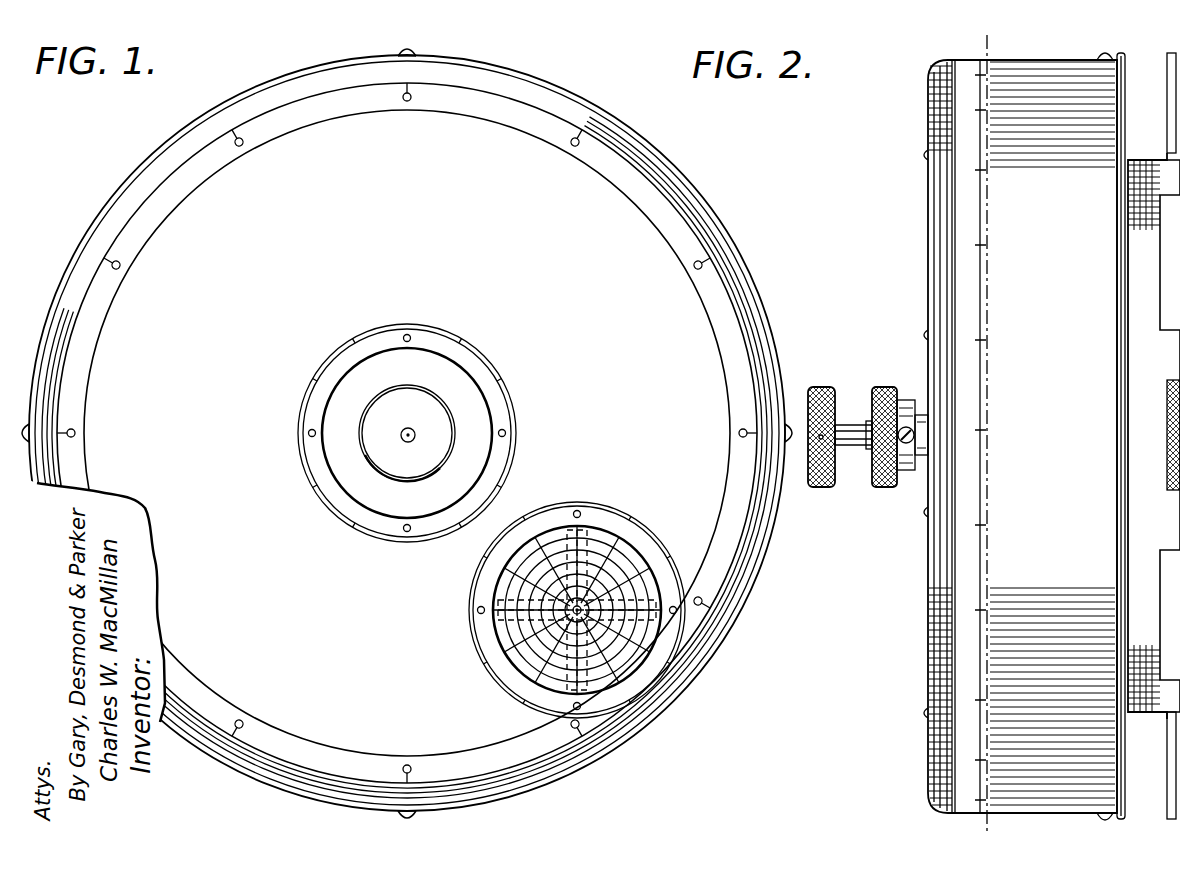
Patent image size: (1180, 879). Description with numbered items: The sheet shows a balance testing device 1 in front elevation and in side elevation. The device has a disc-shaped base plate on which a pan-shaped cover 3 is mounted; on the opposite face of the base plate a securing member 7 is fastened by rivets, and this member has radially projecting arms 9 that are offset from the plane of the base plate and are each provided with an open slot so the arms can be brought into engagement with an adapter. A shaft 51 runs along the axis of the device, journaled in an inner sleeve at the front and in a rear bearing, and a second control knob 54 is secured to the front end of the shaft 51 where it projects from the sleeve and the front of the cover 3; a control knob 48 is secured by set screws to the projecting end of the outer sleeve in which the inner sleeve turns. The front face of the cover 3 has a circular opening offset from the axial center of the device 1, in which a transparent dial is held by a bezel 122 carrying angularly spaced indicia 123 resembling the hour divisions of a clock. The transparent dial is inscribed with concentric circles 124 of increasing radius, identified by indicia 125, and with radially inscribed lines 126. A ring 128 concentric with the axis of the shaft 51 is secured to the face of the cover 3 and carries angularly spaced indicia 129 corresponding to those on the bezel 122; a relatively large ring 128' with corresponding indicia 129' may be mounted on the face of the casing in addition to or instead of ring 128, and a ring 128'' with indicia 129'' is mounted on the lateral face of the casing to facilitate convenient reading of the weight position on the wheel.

In FIG. 1, the balance testing device 1 is at (699, 171).
In FIG. 2, the balance testing device 1 is at (917, 281).
In FIG. 2, the pan-shaped cover 3 is at (1010, 46).
In FIG. 2, the securing member 7 is at (1162, 243).
In FIG. 2, the radially projecting arms 9 is at (1167, 116).
In FIG. 2, the control knob 48 is at (888, 387).
In FIG. 1, the shaft 51 is at (404, 441).
In FIG. 2, the shaft 51 is at (853, 446).
In FIG. 1, the second control knob 54 is at (452, 415).
In FIG. 2, the second control knob 54 is at (820, 387).
In FIG. 1, the bezel 122 is at (537, 703).
In FIG. 2, the bezel 122 is at (927, 633).
In FIG. 1, the angularly spaced indicia 123 is at (632, 690).
In FIG. 1, the concentric circles 124 is at (495, 658).
In FIG. 1, the indicia 125 is at (580, 700).
In FIG. 1, the radially inscribed lines 126 is at (530, 572).
In FIG. 1, the ring 128 is at (385, 433).
In FIG. 2, the ring 128 is at (905, 436).
In FIG. 1, the relatively large ring 128' is at (407, 433).
In FIG. 2, the ring 128'' is at (1007, 436).
In FIG. 1, the angularly spaced indicia 129 is at (408, 454).
In FIG. 1, the indicia 129' is at (407, 433).
In FIG. 2, the indicia 129'' is at (1005, 438).